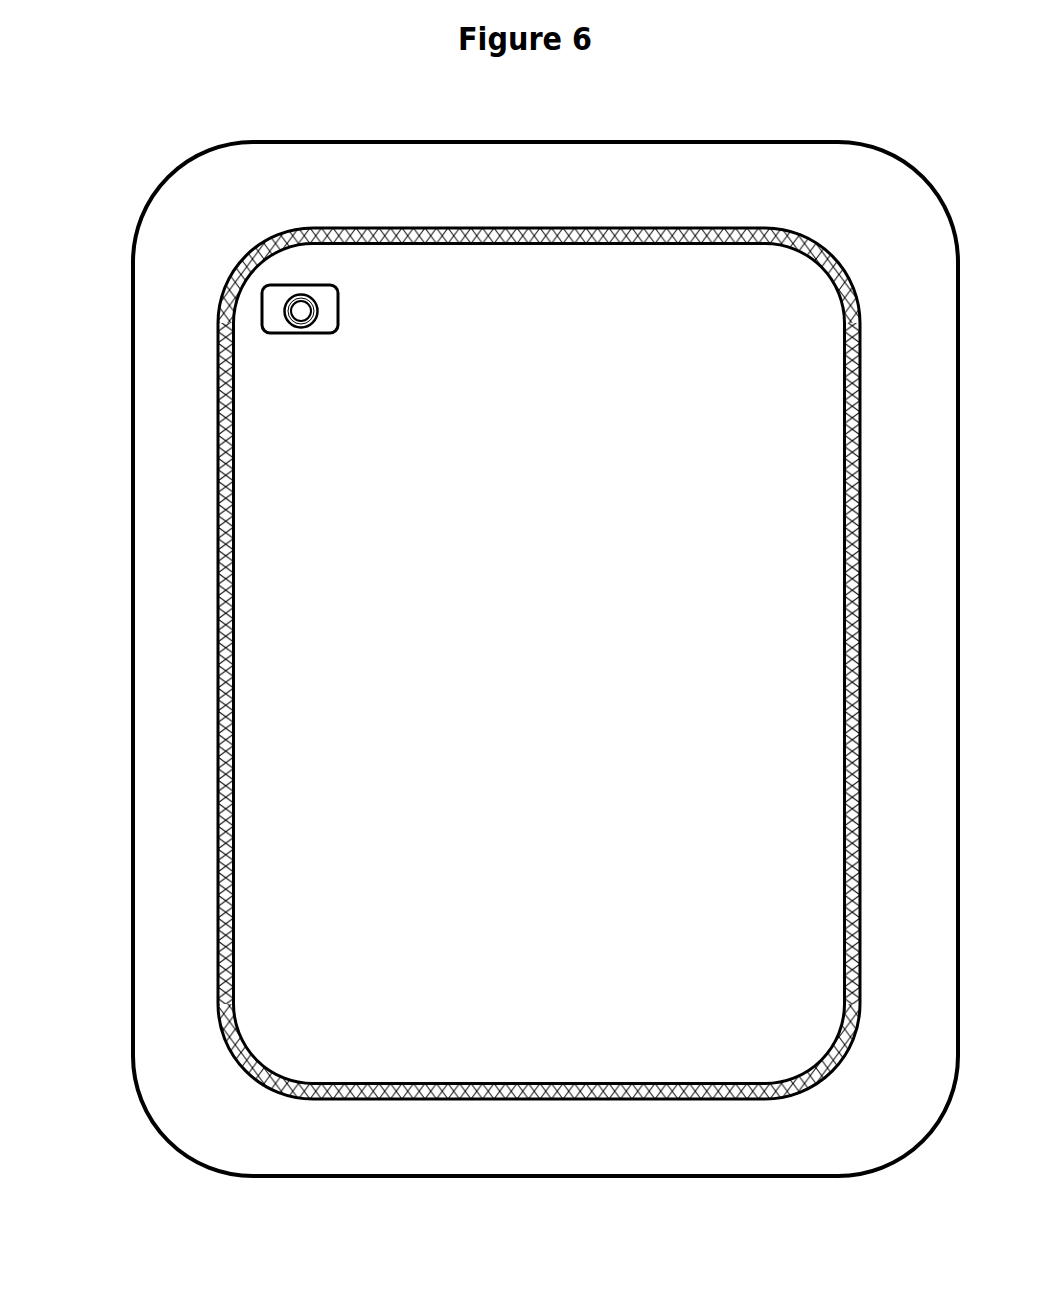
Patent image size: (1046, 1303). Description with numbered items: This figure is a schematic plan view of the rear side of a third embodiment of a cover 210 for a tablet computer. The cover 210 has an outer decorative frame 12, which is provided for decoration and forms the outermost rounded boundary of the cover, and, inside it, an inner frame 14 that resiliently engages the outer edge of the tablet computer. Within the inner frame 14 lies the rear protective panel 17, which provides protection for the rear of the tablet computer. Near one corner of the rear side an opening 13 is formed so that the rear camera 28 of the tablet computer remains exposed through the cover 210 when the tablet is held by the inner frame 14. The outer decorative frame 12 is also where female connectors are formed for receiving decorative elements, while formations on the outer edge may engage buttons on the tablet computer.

The cover 210 is at (160, 146).
The outer decorative frame 12 is at (577, 195).
The opening 13 is at (273, 287).
The inner frame 14 is at (775, 228).
The rear protective panel 17 is at (425, 275).
The rear camera 28 is at (287, 310).